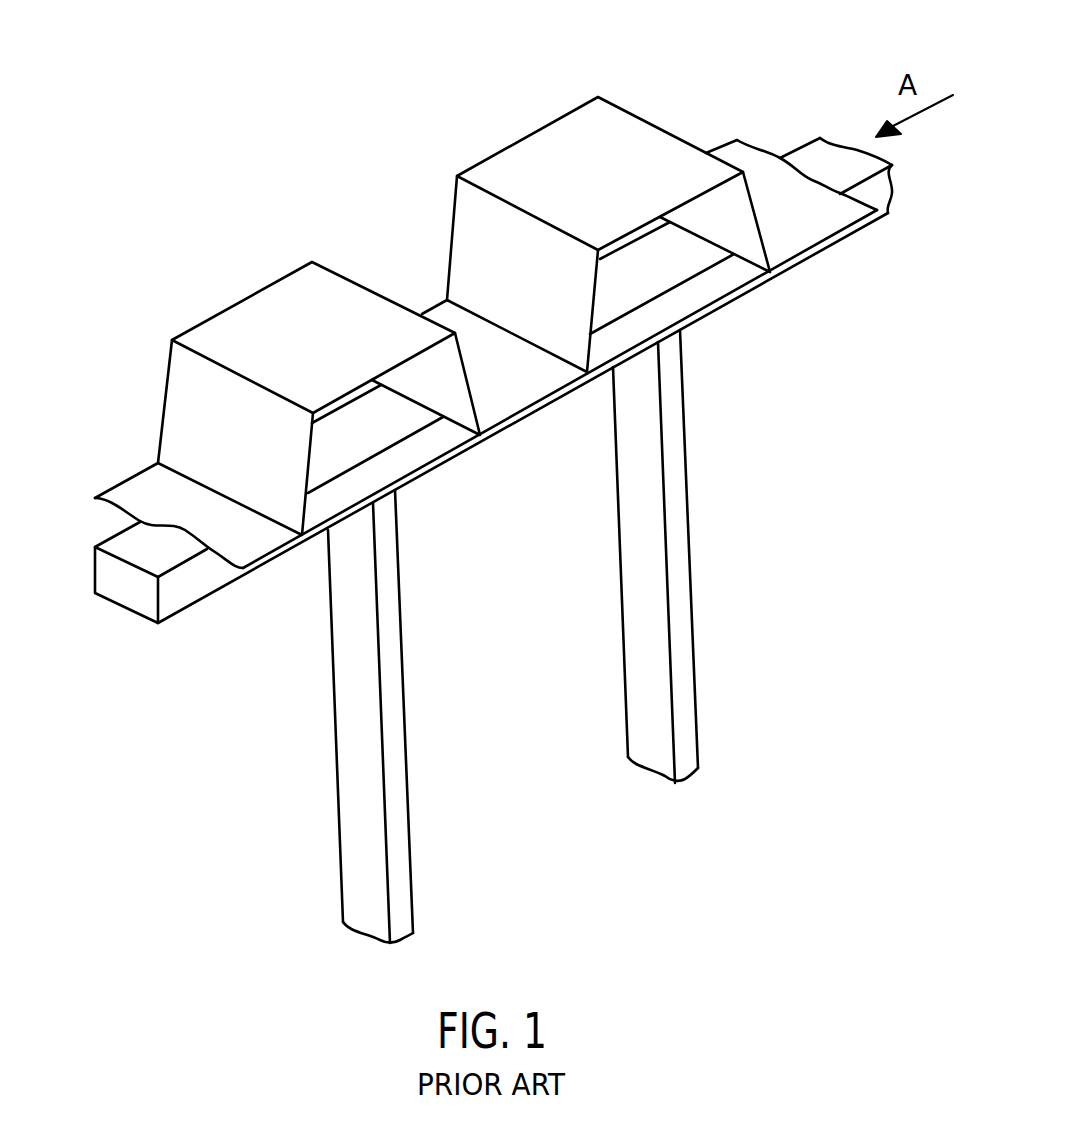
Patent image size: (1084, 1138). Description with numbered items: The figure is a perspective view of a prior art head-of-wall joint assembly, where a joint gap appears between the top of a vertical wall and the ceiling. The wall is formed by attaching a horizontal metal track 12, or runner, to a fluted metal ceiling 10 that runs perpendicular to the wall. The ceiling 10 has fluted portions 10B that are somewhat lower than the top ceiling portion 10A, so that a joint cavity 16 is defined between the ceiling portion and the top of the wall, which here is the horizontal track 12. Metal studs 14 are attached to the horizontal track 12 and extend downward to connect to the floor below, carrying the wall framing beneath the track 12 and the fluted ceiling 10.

The fluted metal ceiling 10 is at (632, 98).
The top ceiling portion 10A is at (555, 152).
The fluted portions 10B is at (737, 142).
The horizontal metal track 12 is at (728, 300).
The metal studs 14 is at (690, 493).
The joint cavity 16 is at (372, 422).